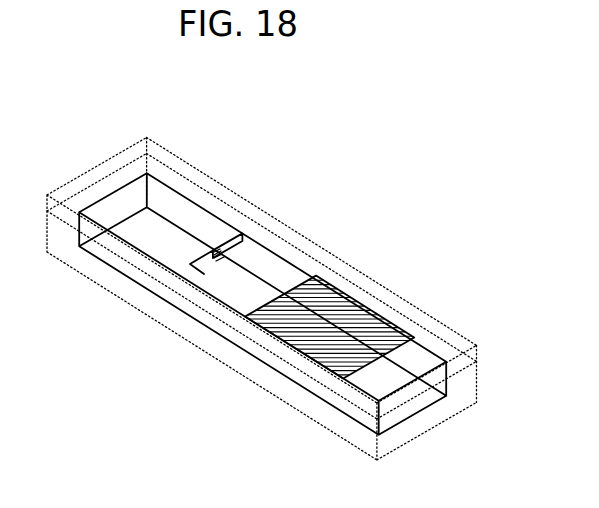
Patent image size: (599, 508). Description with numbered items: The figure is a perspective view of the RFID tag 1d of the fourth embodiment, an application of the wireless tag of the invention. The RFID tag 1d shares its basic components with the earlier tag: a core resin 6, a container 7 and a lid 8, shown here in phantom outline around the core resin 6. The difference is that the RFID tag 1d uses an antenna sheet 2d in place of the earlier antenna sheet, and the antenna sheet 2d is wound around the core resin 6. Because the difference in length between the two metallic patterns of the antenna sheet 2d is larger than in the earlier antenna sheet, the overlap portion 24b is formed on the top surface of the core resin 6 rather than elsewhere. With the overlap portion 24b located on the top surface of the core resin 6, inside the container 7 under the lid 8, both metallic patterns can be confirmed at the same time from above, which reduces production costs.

The RFID tag 1d is at (476, 141).
The antenna sheet 2d is at (110, 190).
The core resin 6 is at (125, 268).
The container 7 is at (432, 425).
The lid 8 is at (463, 337).
The overlap portion 24b is at (317, 279).